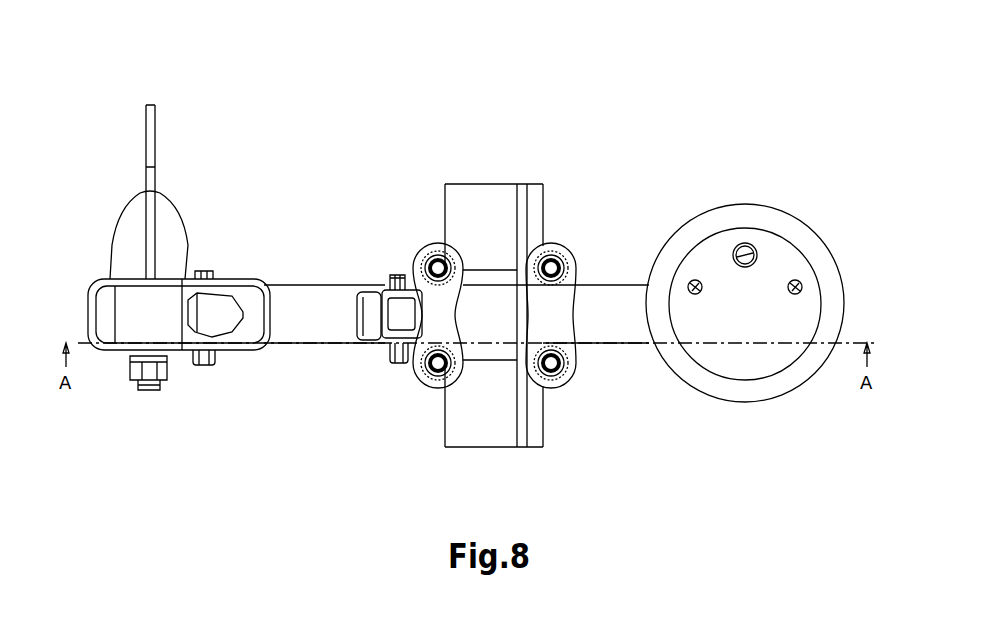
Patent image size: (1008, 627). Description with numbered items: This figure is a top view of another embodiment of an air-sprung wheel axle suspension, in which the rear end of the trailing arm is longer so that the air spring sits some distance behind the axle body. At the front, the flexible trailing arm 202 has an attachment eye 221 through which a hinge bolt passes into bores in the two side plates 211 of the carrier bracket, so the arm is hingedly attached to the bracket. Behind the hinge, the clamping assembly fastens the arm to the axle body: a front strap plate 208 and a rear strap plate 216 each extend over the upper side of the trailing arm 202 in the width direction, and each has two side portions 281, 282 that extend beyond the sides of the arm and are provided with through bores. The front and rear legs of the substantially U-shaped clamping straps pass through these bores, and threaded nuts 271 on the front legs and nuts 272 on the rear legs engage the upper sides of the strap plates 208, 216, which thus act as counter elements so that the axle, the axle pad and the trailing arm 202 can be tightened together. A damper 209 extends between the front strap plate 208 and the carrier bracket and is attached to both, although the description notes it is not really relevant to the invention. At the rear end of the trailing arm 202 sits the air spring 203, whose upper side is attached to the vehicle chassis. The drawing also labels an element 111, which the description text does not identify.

The upright post 111 is at (527, 432).
The trailing arm 202 is at (372, 287).
The air spring 203 is at (805, 245).
The front strap plate 208 is at (435, 307).
The damper 209 is at (310, 322).
The side plates 211 is at (183, 279).
The rear strap plate 216 is at (572, 290).
The attachment eye 221 is at (138, 313).
The threaded nut 271 is at (440, 247).
The threaded nut 272 is at (555, 252).
The side portions 281 is at (458, 262).
The side portions 282 is at (583, 260).